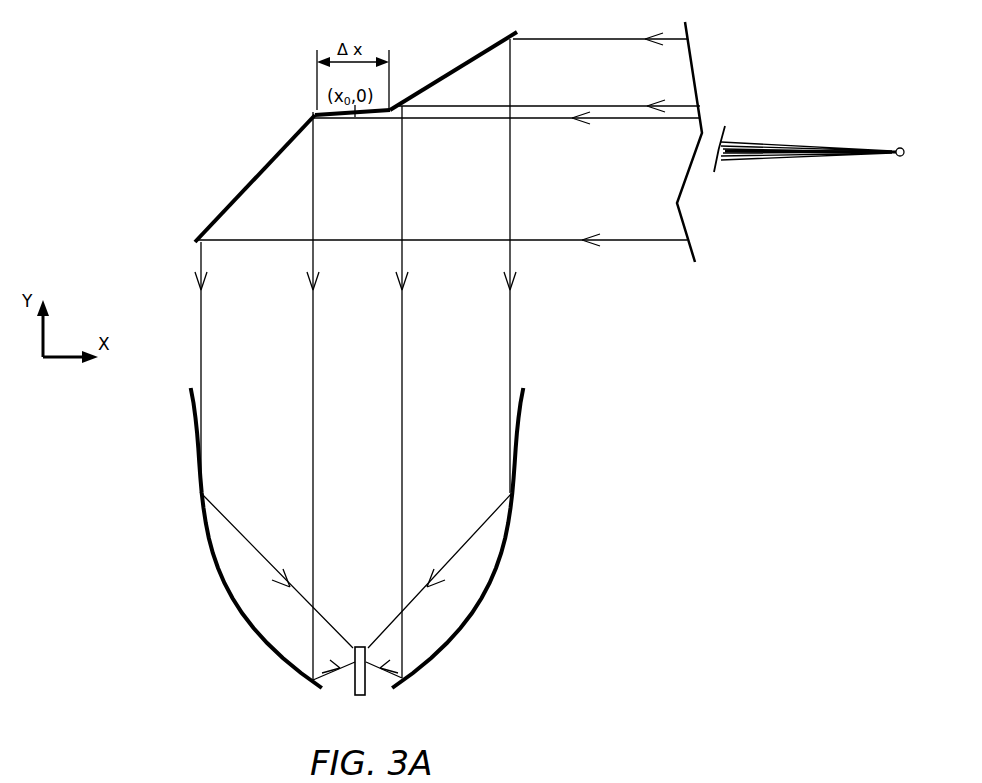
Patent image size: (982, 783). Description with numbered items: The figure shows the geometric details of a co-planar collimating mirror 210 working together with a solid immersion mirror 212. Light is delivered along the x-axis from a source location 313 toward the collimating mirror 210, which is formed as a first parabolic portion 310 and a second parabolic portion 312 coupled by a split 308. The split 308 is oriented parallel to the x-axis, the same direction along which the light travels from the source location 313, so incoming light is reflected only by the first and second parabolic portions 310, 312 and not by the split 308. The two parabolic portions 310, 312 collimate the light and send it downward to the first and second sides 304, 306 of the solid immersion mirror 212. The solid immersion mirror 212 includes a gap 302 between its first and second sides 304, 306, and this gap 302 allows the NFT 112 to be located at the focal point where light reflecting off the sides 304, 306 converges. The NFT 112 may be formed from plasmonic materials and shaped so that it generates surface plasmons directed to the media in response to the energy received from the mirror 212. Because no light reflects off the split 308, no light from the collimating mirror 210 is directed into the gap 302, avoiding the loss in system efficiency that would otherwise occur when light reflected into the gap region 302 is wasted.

The collimating mirror 210 is at (162, 144).
The first parabolic portion 310 is at (233, 193).
The split 308 is at (318, 111).
The second parabolic portion 312 is at (490, 52).
The source location 313 is at (895, 147).
The solid immersion mirror 212 is at (145, 625).
The first side 304 is at (265, 642).
The second side 306 is at (457, 640).
The NFT 112 is at (353, 692).
The gap 302 is at (392, 702).